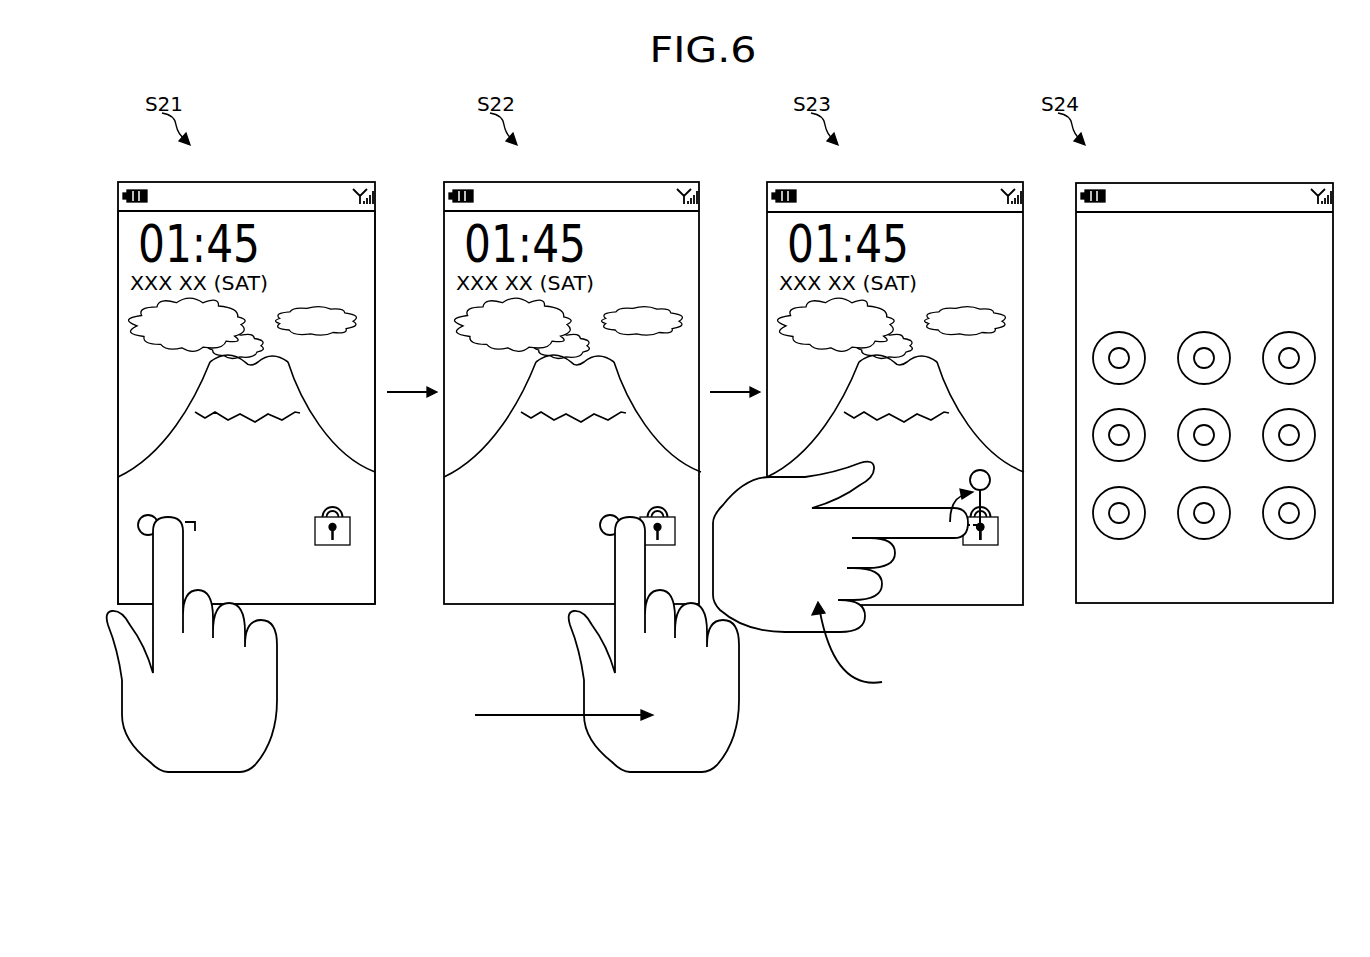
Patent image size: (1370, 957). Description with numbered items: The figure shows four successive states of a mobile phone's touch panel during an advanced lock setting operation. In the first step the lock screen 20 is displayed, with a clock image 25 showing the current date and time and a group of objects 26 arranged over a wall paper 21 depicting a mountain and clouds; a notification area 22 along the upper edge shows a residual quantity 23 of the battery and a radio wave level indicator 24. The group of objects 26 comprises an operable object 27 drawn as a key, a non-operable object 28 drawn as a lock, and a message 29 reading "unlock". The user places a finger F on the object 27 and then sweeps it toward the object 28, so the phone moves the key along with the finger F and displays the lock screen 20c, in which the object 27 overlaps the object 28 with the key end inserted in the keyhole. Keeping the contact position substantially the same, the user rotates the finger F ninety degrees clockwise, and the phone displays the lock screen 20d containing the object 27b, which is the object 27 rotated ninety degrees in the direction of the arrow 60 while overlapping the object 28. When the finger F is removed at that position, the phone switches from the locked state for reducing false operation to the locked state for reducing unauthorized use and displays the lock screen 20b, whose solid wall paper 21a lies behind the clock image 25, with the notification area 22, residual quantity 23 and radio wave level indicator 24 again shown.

The lock screen 20 is at (279, 178).
The lock screen 20b is at (1236, 178).
The lock screen 20c is at (618, 178).
The lock screen 20d is at (942, 178).
The wall paper 21 is at (367, 348).
The wall paper 21a is at (1084, 330).
The notification area 22 is at (218, 190).
The residual quantity 23 is at (135, 183).
The radio wave level indicator 24 is at (355, 185).
The clock image 25 is at (262, 243).
The group of objects 26 is at (341, 492).
The object 27 is at (138, 525).
The object 27b is at (990, 482).
The object 28 is at (350, 530).
The message 29 is at (273, 575).
The arrow 60 is at (950, 512).
The finger F is at (163, 568).